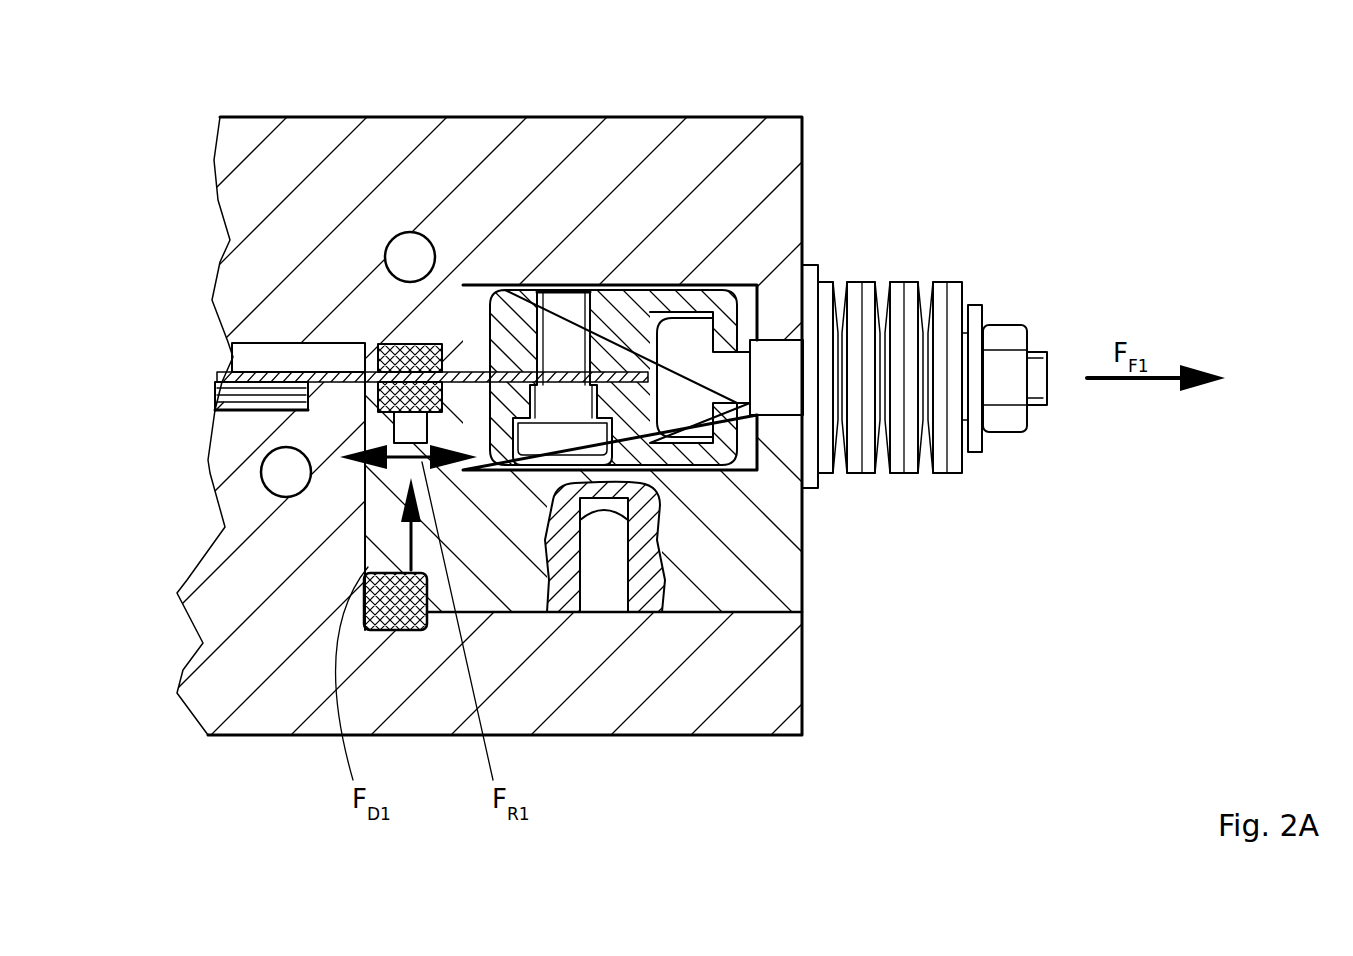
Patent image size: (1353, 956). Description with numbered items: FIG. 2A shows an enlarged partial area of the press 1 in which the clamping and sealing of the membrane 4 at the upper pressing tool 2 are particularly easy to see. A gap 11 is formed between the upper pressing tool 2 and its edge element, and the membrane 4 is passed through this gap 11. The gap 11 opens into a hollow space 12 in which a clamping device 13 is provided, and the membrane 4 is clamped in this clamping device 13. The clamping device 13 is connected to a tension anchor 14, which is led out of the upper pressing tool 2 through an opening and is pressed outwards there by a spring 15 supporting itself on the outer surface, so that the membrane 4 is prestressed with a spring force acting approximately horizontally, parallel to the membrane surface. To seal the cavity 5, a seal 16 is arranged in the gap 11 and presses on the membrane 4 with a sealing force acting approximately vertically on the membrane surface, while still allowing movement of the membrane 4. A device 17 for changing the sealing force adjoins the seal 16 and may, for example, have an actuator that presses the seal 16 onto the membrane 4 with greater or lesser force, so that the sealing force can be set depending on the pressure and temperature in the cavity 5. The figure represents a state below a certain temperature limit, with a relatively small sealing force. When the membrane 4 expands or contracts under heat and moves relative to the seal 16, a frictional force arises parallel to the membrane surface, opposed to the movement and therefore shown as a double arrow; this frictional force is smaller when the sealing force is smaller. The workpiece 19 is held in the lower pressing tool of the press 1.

The press 1 is at (1008, 95).
The upper pressing tool 2 is at (770, 135).
The membrane 4 is at (253, 377).
The cavity 5 is at (292, 355).
The gap 11 is at (528, 288).
The hollow space 12 is at (476, 305).
The clamping device 13 is at (622, 312).
The tension anchor 14 is at (700, 337).
The spring 15 is at (897, 295).
The seal 16 is at (385, 342).
The device for changing the sealing force 17 is at (410, 430).
The workpiece 19 is at (240, 398).